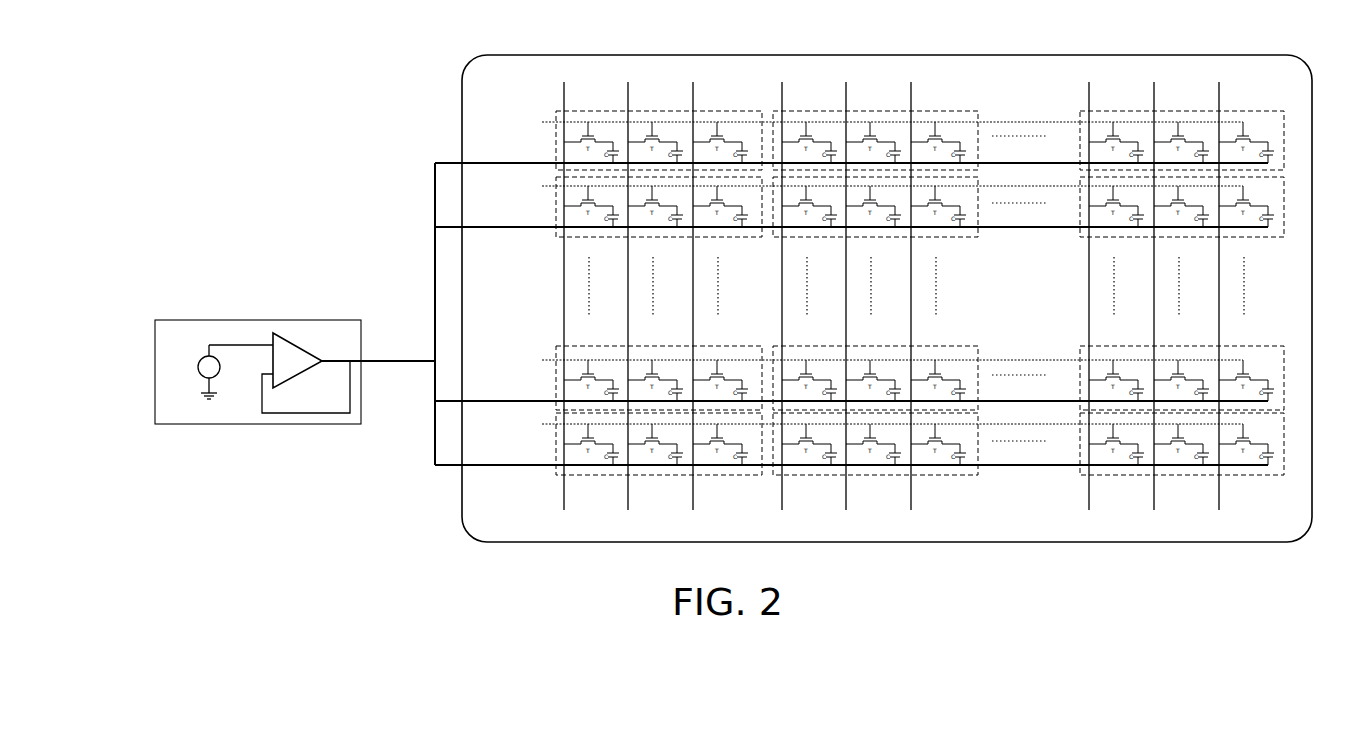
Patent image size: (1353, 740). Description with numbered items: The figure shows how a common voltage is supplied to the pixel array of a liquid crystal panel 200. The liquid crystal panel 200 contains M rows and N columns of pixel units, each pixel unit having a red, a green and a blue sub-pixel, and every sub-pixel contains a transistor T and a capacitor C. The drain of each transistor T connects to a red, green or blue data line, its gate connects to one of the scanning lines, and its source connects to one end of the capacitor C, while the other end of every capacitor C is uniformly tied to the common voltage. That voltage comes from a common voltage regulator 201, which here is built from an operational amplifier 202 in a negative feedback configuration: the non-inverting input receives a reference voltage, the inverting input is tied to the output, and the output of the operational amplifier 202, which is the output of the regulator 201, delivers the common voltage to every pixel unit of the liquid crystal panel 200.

The liquid crystal panel 200 is at (892, 56).
The VCOM regulator 201 is at (295, 366).
The operational amplifier 202 is at (290, 380).